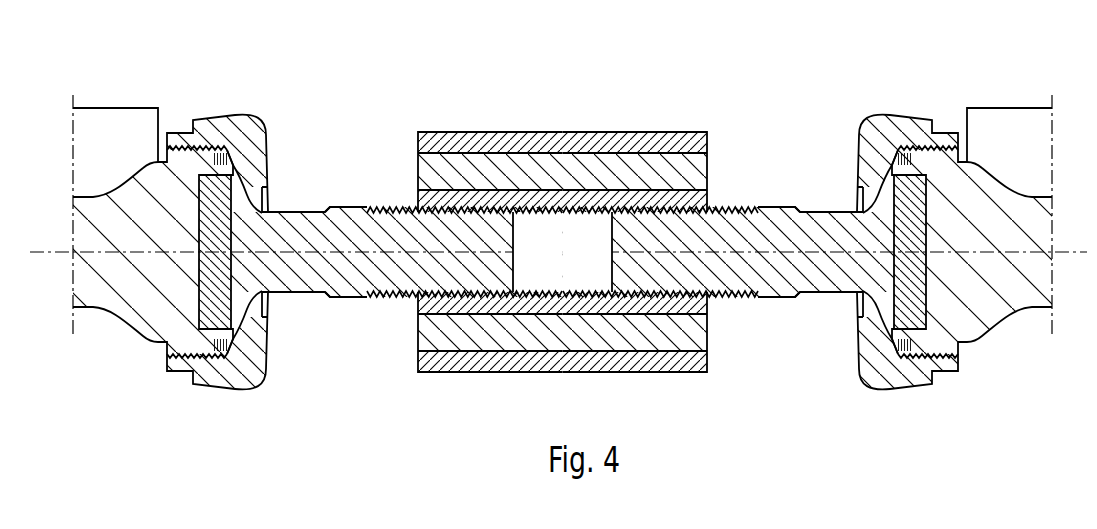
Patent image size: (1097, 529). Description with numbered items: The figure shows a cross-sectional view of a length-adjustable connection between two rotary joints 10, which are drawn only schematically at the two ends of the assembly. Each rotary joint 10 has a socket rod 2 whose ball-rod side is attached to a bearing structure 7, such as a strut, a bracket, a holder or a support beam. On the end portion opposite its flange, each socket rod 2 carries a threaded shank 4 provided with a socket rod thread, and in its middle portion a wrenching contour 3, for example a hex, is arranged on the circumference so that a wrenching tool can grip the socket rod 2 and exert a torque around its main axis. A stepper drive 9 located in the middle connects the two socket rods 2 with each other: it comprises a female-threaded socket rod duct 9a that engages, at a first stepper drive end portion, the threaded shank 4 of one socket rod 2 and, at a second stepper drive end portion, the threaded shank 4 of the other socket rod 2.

The socket rod 2 is at (302, 293).
The wrenching contour 3 is at (342, 205).
The threaded shank 4 is at (393, 205).
The bearing structure 7 is at (113, 116).
The stepper drive 9 is at (511, 116).
The female-threaded socket rod duct 9a is at (562, 200).
The rotary joint 10 is at (219, 104).